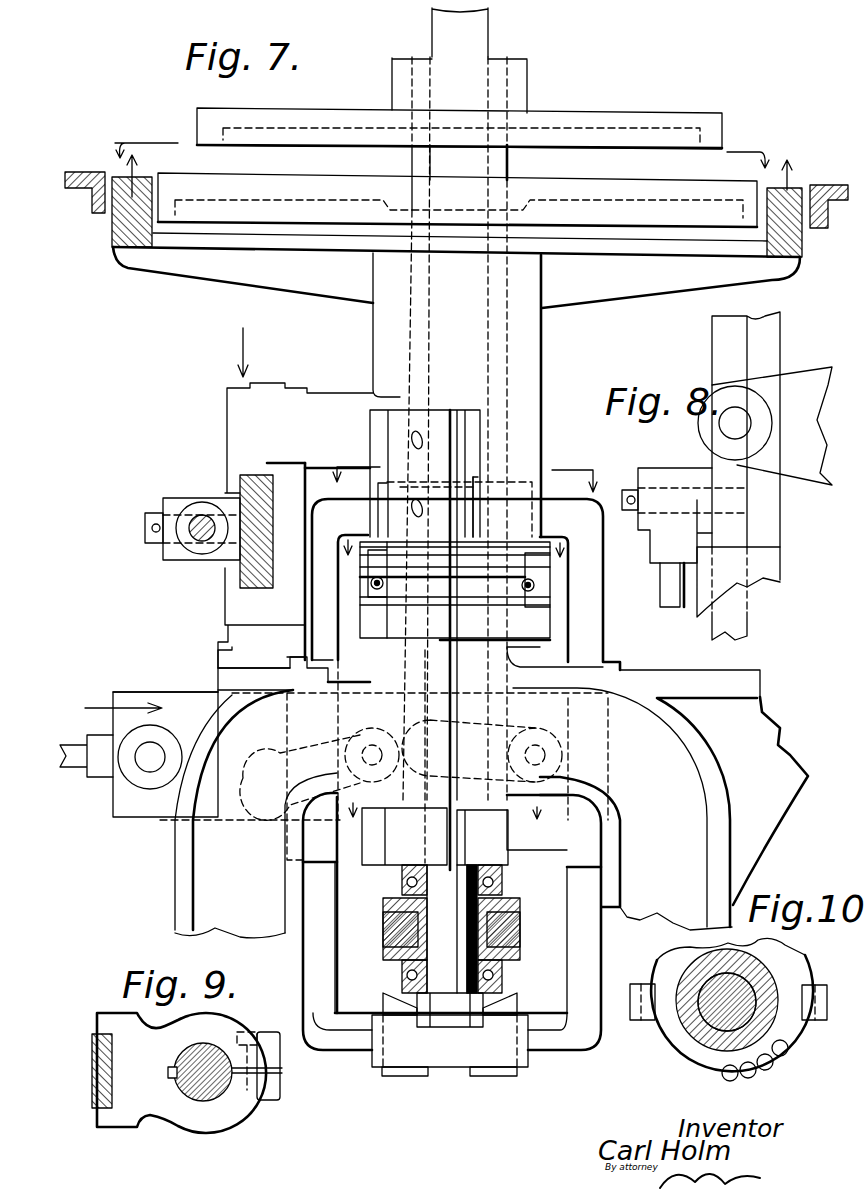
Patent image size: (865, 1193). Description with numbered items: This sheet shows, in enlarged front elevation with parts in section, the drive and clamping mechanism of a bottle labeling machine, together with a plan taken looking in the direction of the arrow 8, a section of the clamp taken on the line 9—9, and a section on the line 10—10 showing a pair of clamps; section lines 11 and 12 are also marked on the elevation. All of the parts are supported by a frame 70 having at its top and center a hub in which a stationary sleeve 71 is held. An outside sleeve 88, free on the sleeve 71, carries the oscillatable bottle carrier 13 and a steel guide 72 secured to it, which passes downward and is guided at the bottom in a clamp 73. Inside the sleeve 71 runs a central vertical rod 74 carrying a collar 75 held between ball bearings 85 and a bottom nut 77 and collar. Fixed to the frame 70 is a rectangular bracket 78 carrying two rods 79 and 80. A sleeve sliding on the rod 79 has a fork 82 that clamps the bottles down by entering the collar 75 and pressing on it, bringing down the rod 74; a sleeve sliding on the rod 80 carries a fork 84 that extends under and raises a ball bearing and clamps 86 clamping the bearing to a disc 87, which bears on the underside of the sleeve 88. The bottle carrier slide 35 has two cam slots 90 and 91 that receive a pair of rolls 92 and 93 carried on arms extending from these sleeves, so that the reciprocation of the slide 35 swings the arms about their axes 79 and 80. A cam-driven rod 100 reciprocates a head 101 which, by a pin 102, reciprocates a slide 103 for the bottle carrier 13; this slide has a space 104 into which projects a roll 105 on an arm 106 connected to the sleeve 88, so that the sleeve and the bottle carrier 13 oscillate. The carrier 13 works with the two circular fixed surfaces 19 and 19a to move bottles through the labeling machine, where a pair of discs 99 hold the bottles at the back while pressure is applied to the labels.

In FIG. 7, the arrow 8 is at (250, 352).
In FIG. 7, the section line 9 is at (451, 826).
In FIG. 7, the section line 10 is at (458, 549).
In FIG. 7, the section line / arrow for Fig. 11 is at (453, 159).
In FIG. 7, the section line / arrow for Fig. 12 is at (465, 483).
In FIG. 7, the oscillatable bottle carrier 13 is at (112, 245).
In FIG. 7, the fixed surface 19 is at (76, 196).
In FIG. 7, the fixed surface 19a is at (185, 178).
In FIG. 7, the bottle carrier slide 35 is at (160, 688).
In FIG. 7, the frame 70 is at (175, 862).
In FIG. 7, the stationary sleeve 71 is at (541, 332).
In FIG. 10, the stationary sleeve 71 is at (720, 1047).
In FIG. 7, the steel guide 72 is at (393, 440).
In FIG. 9, the steel guide 72 is at (92, 1053).
In FIG. 7, the clamp 73 is at (500, 855).
In FIG. 9, the clamp 73 is at (185, 1120).
In FIG. 7, the central vertical rod 74 is at (446, 40).
In FIG. 9, the central vertical rod 74 is at (217, 1093).
In FIG. 10, the central vertical rod 74 is at (717, 1017).
In FIG. 7, the collar 75 is at (520, 908).
In FIG. 7, the bottom nut 77 is at (443, 1012).
In FIG. 7, the rectangular bracket 78 is at (560, 1043).
In FIG. 7, the rod 79 is at (436, 468).
In FIG. 7, the rod 80 is at (515, 478).
In FIG. 7, the fork 82 is at (520, 937).
In FIG. 7, the fork 84 is at (530, 630).
In FIG. 7, the ball bearings 85 is at (377, 597).
In FIG. 7, the clamps 86 is at (360, 583).
In FIG. 10, the clamps 86 is at (630, 998).
In FIG. 7, the disc 87 is at (528, 558).
In FIG. 10, the disc 87 is at (797, 1037).
In FIG. 7, the outside sleeve 88 is at (372, 328).
In FIG. 7, the cam slot 90 is at (322, 752).
In FIG. 7, the cam slot 91 is at (468, 745).
In FIG. 7, the roll 92 is at (368, 738).
In FIG. 7, the roll 93 is at (548, 748).
In FIG. 7, the discs 99 is at (352, 140).
In FIG. 7, the rod 100 is at (203, 540).
In FIG. 8, the rod 100 is at (660, 587).
In FIG. 7, the head 101 is at (190, 493).
In FIG. 8, the head 101 is at (692, 508).
In FIG. 7, the pin 102 is at (145, 528).
In FIG. 8, the pin 102 is at (620, 487).
In FIG. 7, the slide 103 is at (247, 588).
In FIG. 8, the slide 103 is at (748, 607).
In FIG. 8, the space 104 is at (723, 406).
In FIG. 8, the roll 105 is at (712, 403).
In FIG. 7, the arm 106 is at (337, 395).
In FIG. 8, the arm 106 is at (802, 378).